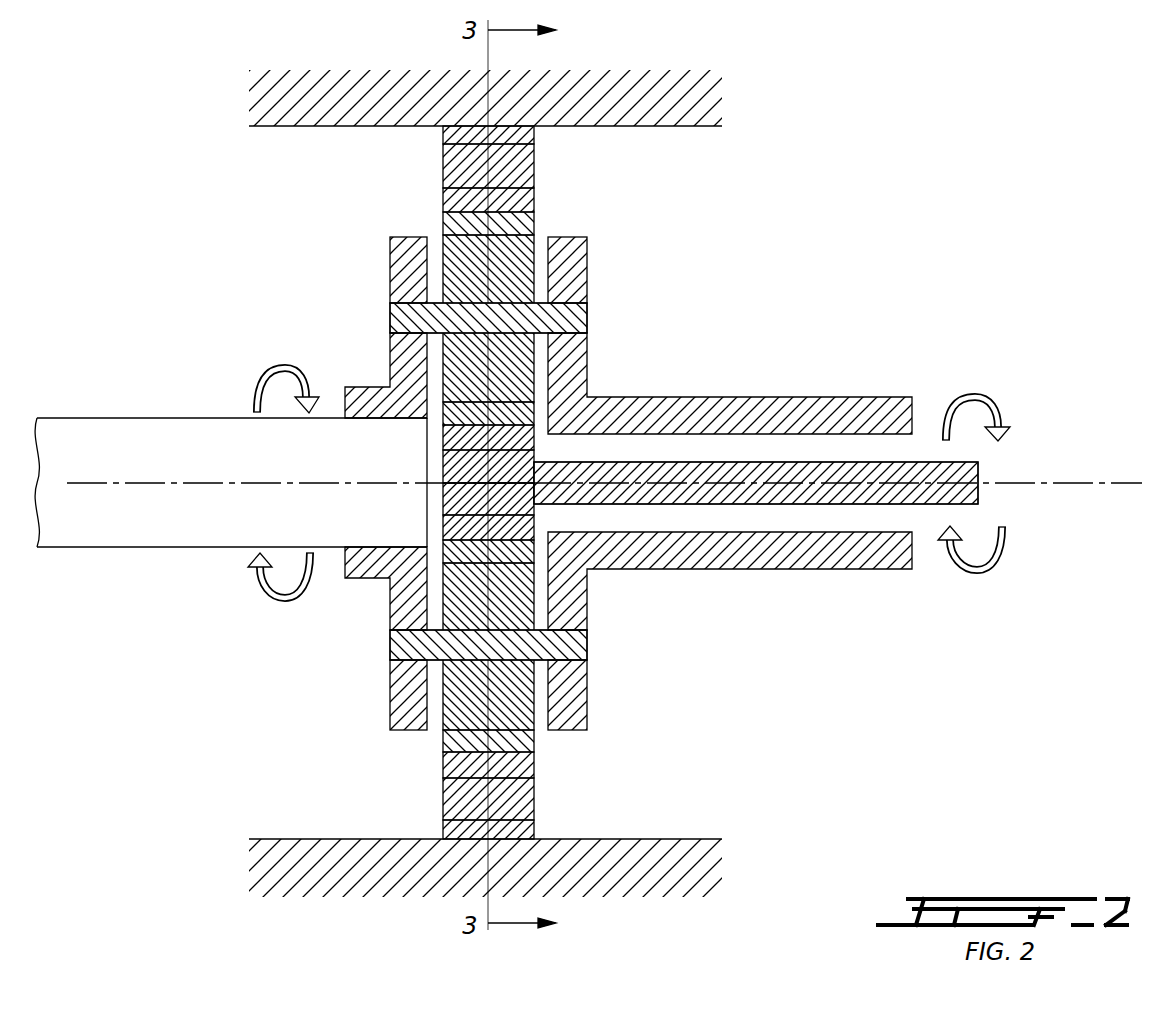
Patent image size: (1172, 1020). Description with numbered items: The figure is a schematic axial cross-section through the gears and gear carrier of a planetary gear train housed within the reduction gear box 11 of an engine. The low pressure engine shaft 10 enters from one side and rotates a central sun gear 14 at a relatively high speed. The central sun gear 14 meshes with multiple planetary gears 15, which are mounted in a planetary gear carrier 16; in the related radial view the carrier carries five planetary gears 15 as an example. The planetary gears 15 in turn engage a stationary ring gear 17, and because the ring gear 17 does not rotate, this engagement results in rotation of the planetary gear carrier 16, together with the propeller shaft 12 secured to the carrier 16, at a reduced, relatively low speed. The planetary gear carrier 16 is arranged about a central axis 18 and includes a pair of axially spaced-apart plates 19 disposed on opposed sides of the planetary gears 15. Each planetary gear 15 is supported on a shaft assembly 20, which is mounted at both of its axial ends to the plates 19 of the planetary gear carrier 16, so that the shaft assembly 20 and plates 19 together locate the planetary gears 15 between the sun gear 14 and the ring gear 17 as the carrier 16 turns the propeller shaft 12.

The low pressure engine shaft 10 is at (928, 460).
The reduction gear box 11 is at (783, 197).
The propeller shaft 12 is at (100, 418).
The central sun gear 14 is at (493, 463).
The planetary gears 15 is at (505, 256).
The planetary gear carrier 16 is at (390, 357).
The stationary ring gear 17 is at (443, 150).
The central axis 18 is at (1078, 482).
The plates 19 is at (403, 237).
The shaft assembly 20 is at (487, 325).